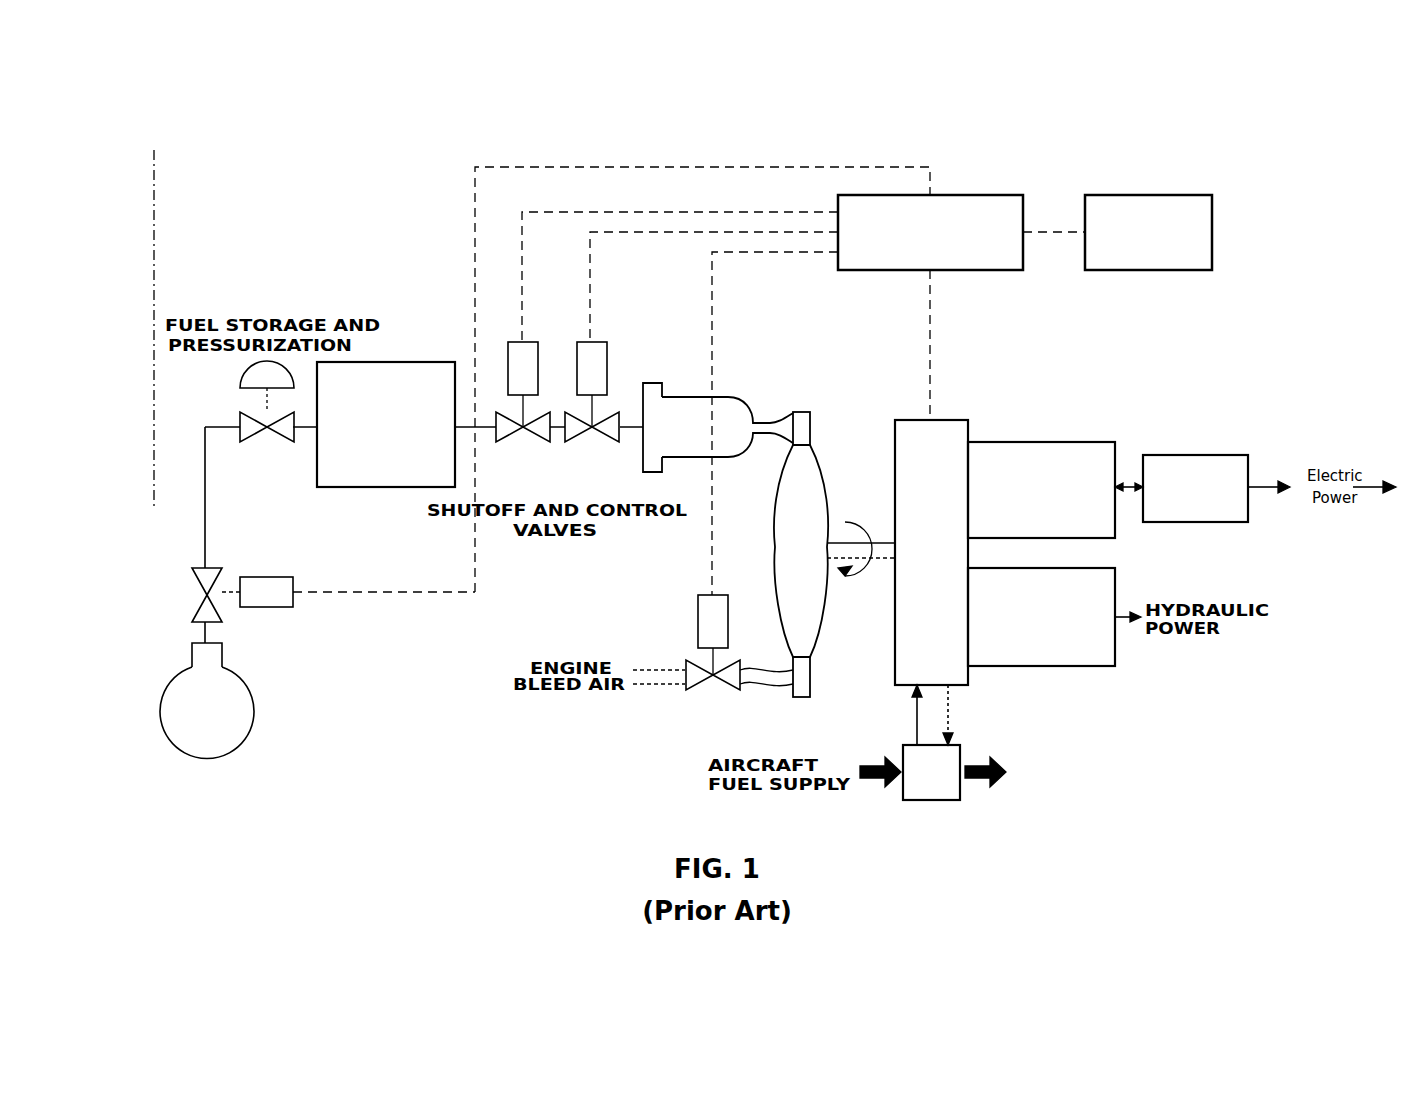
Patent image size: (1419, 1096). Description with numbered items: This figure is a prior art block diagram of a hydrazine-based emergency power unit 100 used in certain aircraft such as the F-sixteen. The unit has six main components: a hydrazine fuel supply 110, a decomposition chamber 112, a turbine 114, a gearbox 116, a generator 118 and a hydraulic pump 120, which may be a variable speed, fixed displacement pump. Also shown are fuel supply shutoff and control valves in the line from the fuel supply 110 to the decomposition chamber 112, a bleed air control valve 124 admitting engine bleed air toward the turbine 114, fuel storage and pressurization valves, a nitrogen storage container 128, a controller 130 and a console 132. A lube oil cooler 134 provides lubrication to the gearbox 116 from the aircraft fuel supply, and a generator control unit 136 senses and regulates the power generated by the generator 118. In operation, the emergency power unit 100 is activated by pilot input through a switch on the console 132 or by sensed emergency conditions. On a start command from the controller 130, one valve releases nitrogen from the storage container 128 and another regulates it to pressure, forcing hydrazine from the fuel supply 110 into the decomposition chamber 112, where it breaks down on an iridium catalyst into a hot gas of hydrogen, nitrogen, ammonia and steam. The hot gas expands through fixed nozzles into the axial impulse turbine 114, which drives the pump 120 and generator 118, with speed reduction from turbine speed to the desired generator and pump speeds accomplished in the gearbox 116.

The emergency power unit 100 is at (1008, 139).
The hydrazine fuel supply 110 is at (400, 372).
The decomposition chamber 112 is at (720, 388).
The turbine 114 is at (811, 503).
The gearbox 116 is at (943, 428).
The generator 118 is at (1018, 447).
The hydraulic pump 120 is at (1053, 652).
The bleed air control valve 124 is at (700, 670).
The nitrogen storage container 128 is at (251, 727).
The controller 130 is at (962, 258).
The console 132 is at (1150, 258).
The lube oil cooler 134 is at (943, 783).
The generator control unit 136 is at (1190, 453).